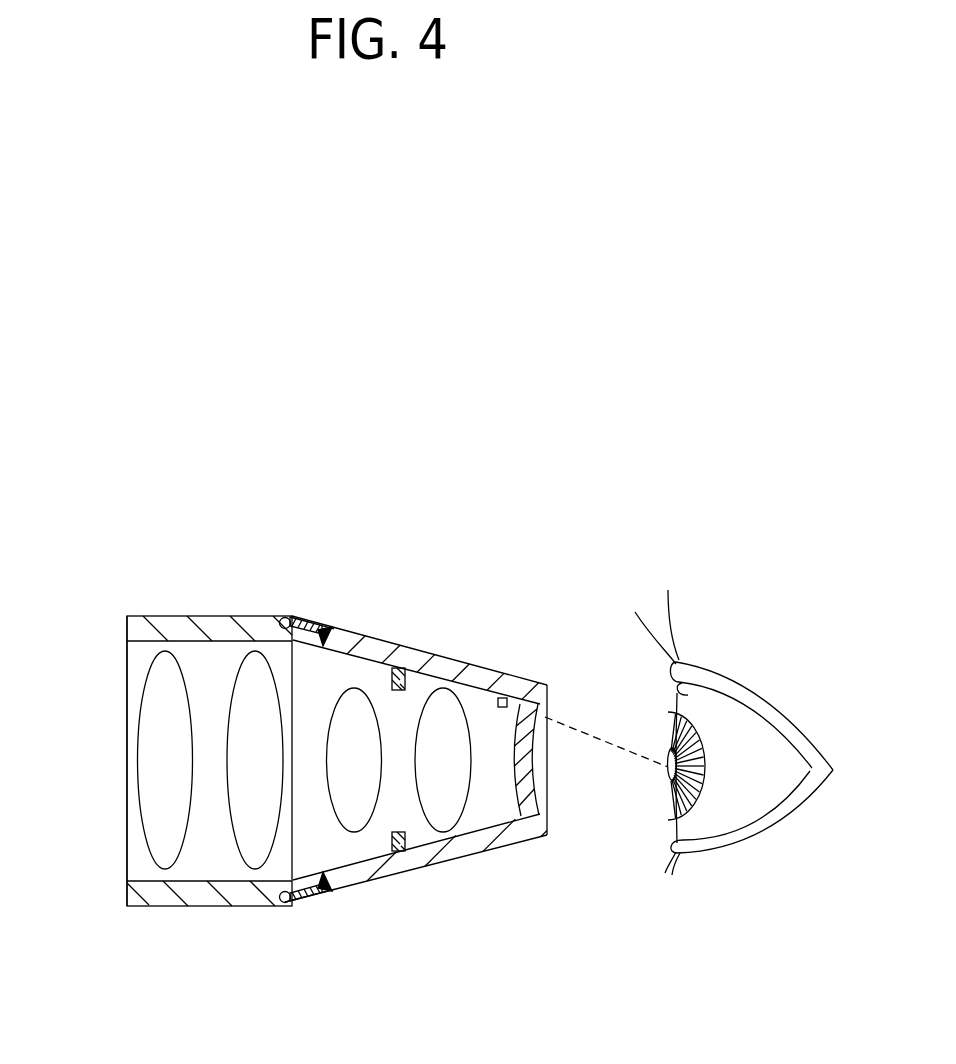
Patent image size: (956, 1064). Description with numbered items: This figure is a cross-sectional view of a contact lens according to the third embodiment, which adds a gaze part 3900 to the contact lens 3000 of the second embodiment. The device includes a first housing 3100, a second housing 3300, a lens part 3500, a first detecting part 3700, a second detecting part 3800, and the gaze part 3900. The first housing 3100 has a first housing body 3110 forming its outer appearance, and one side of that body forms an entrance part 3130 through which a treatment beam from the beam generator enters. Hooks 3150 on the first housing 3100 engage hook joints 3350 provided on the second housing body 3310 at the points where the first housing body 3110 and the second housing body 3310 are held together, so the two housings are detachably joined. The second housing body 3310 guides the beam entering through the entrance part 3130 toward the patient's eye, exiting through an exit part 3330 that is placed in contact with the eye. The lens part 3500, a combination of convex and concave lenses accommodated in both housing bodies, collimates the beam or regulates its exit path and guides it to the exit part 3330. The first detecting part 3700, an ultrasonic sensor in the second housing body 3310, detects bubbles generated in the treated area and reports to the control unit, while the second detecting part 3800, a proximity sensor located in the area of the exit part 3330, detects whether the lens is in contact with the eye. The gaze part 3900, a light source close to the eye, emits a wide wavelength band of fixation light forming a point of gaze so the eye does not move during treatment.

The contact lens 3000 is at (516, 597).
The first housing 3100 is at (317, 987).
The first housing body 3110 is at (160, 897).
The entrance part 3130 is at (122, 853).
The hooks 3150 is at (305, 902).
The second housing 3300 is at (607, 987).
The second housing body 3310 is at (467, 848).
The exit part 3330 is at (530, 778).
The hook joints 3350 is at (338, 885).
The lens part 3500 is at (262, 668).
The first detecting part 3700 is at (397, 668).
The second detecting part 3800 is at (523, 747).
The gaze part 3900 is at (507, 700).